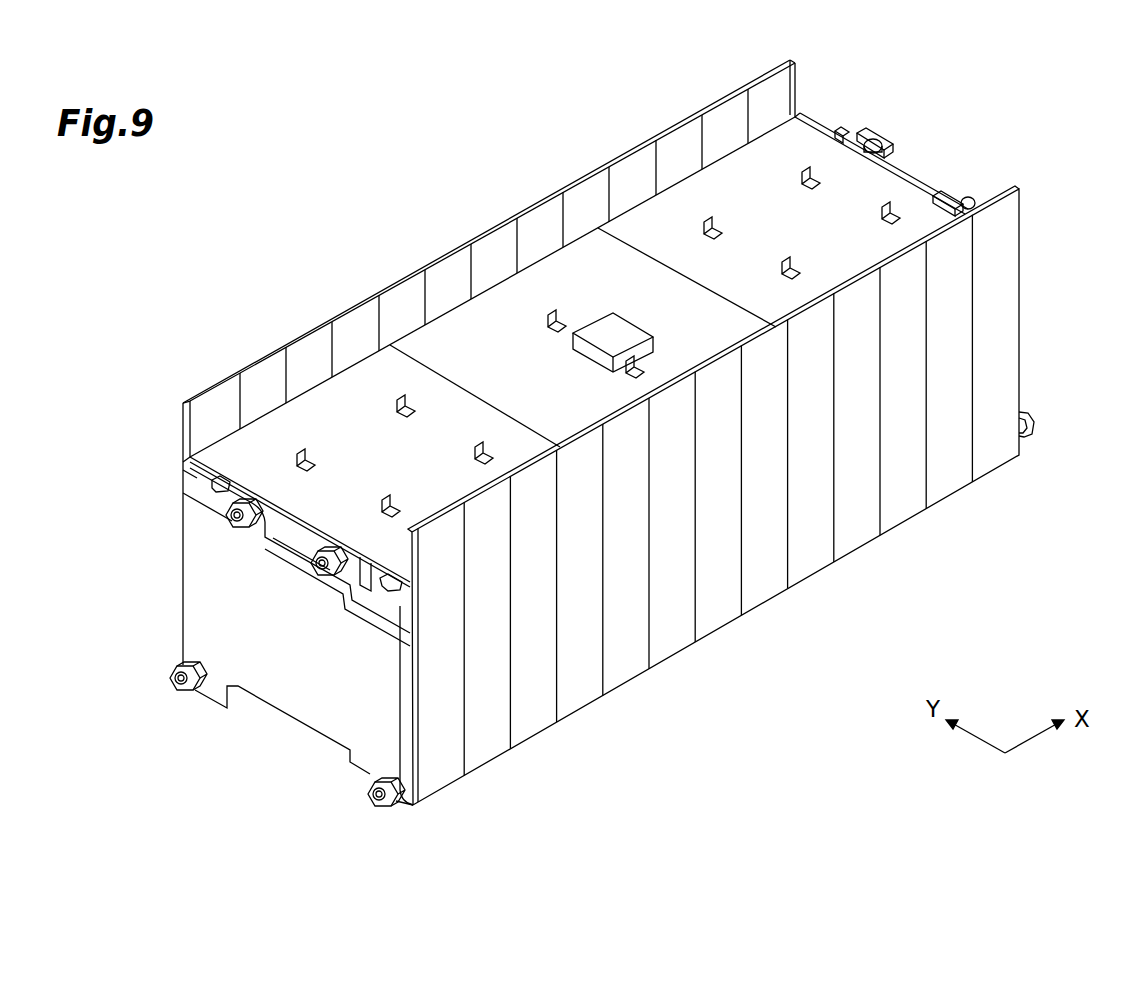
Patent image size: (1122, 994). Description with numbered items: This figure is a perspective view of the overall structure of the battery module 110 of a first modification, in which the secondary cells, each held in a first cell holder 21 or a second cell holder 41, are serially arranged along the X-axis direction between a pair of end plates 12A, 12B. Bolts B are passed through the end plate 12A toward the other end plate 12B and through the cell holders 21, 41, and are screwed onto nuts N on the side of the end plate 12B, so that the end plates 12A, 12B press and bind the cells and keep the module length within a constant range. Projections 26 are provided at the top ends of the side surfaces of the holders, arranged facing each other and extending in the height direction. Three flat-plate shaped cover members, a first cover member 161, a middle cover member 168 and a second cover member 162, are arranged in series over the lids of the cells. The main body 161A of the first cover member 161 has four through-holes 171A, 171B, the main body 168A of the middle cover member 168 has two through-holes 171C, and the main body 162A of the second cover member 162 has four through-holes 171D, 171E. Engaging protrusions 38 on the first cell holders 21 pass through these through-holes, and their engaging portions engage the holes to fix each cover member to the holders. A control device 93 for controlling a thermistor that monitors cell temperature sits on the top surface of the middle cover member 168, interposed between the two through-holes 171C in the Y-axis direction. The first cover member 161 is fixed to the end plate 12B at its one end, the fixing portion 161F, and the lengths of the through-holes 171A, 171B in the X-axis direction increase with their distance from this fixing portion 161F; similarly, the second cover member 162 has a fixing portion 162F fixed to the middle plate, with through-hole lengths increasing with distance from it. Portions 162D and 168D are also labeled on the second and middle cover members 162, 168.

The battery module 110 is at (108, 297).
The end plate 12A is at (1021, 340).
The end plate 12B is at (279, 716).
The first cell holder 21 is at (499, 757).
The second cell holder 41 is at (452, 783).
The projection 26 is at (210, 392).
The engaging protrusion 38 is at (810, 176).
The control device 93 is at (636, 330).
The first cover member 161 is at (345, 400).
The main body 161A is at (383, 598).
The fixing portion 161F is at (283, 553).
The second cover member 162 is at (645, 222).
The main body 162A is at (896, 182).
The upstanding portion of third cover 162D is at (697, 158).
The fixing portion 162F is at (928, 190).
The middle cover member 168 is at (490, 318).
The main body 168A is at (557, 268).
The upstanding portion of second cover 168D is at (410, 314).
The through-hole 171A is at (312, 468).
The through-hole 171B is at (480, 447).
The through-hole 171C is at (564, 325).
The through-hole 171D is at (790, 262).
The through-hole 171E is at (880, 215).
The bolt B is at (878, 140).
The nut N is at (243, 530).